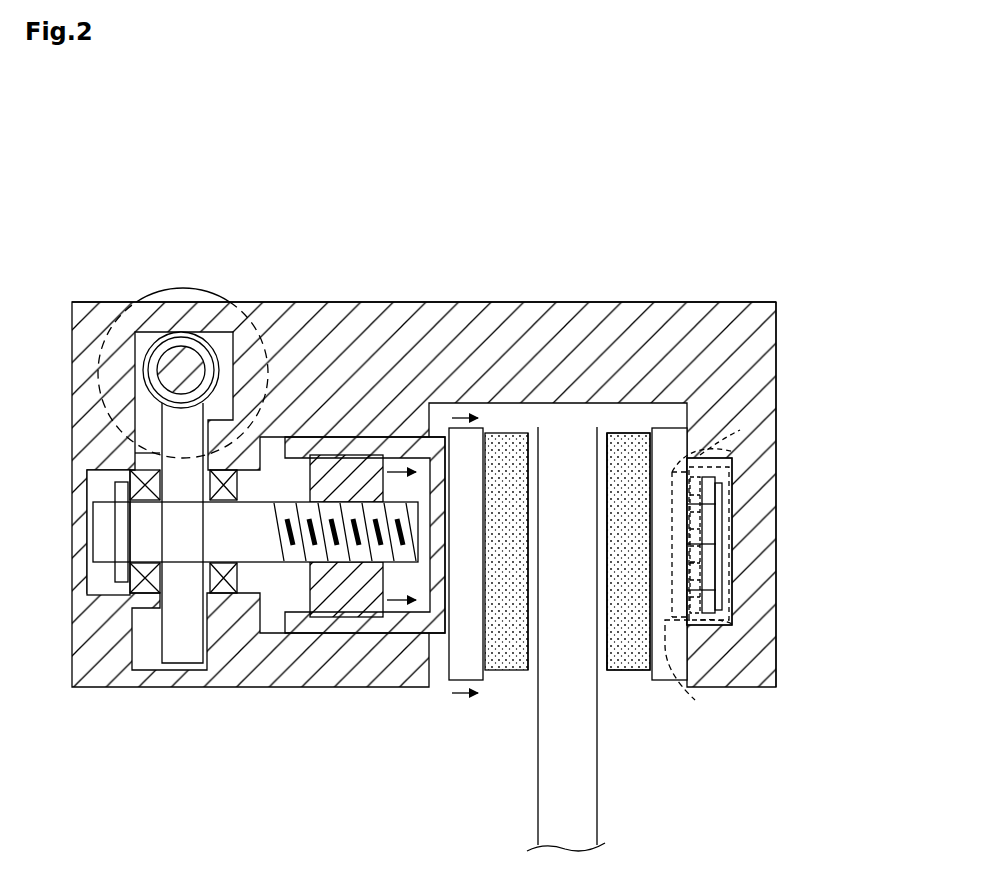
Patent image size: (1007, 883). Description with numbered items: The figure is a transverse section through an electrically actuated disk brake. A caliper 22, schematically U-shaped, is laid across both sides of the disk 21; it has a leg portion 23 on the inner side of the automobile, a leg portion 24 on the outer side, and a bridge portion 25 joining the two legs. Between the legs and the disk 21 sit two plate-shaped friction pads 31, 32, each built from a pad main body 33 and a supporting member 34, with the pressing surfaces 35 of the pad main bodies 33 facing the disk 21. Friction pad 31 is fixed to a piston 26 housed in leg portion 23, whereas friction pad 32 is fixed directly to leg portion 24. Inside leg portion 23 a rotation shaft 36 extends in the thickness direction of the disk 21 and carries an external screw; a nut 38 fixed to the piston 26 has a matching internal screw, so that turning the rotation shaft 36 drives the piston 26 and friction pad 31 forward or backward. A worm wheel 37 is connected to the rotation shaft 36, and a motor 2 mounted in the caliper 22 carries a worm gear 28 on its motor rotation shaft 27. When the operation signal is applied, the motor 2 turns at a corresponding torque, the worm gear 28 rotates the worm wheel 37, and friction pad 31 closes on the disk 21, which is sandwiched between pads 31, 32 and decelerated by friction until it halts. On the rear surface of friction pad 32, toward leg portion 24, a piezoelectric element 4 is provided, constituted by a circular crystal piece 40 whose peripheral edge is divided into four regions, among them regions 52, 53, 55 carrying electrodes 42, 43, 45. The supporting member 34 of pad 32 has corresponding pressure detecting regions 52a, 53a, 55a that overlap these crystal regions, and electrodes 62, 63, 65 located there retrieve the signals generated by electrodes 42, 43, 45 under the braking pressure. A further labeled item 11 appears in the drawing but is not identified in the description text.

The motor 2 is at (187, 290).
The piezoelectric element 4 is at (724, 628).
The actuator 11 is at (333, 725).
The disk 21 is at (598, 822).
The caliper 22 is at (603, 281).
The leg portion 23 is at (107, 688).
The leg portion 24 is at (776, 672).
The bridge portion 25 is at (456, 303).
The piston 26 is at (276, 563).
The motor rotation shaft 27 is at (207, 336).
The worm gear 28 is at (160, 345).
The friction pad 31 is at (486, 724).
The friction pad 32 is at (664, 709).
The pad main body 33 is at (521, 672).
The supporting member 34 is at (668, 425).
The pressing surface 35 is at (531, 467).
The rotation shaft 36 is at (212, 681).
The worm wheel 37 is at (162, 681).
The nut 38 is at (352, 615).
The crystal piece 40 is at (704, 484).
The electrode 42 is at (712, 508).
The electrode 43 is at (712, 600).
The electrode 45 is at (718, 540).
The region 52 is at (735, 452).
The pressure detecting region 52a is at (740, 430).
The region 53 is at (735, 625).
The pressure detecting region 53a is at (700, 675).
The region 55 is at (700, 560).
The pressure detecting region 55a is at (690, 562).
The electrode 62 is at (716, 504).
The electrode 63 is at (700, 590).
The electrode 65 is at (700, 545).